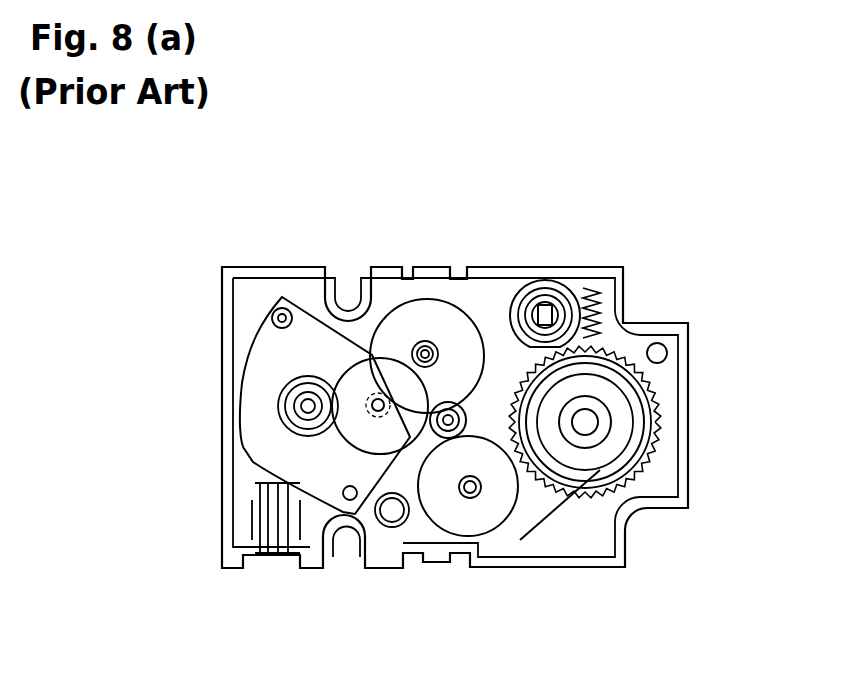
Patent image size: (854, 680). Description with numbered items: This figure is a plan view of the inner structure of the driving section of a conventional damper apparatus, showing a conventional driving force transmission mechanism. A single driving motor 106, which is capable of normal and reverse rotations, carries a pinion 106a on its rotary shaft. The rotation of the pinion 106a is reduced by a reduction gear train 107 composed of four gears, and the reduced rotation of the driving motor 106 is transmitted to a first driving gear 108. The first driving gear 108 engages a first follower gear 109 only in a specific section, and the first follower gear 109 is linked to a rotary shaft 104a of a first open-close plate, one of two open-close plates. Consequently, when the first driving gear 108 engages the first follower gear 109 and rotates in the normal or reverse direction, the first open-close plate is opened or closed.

The driving motor 106 is at (262, 360).
The pinion 106a is at (259, 365).
The reduction gear train 107 is at (487, 240).
The first driving gear 108 is at (608, 457).
The first follower gear 109 is at (530, 290).
The rotary shaft 104a is at (565, 300).